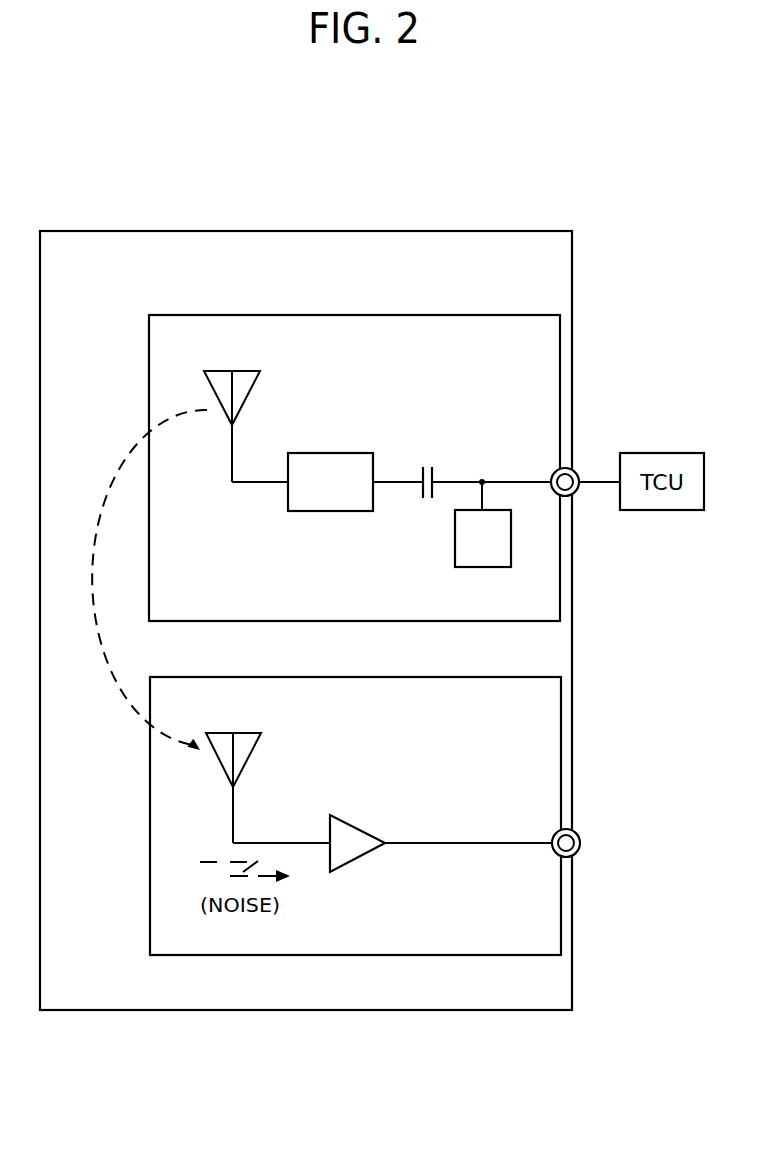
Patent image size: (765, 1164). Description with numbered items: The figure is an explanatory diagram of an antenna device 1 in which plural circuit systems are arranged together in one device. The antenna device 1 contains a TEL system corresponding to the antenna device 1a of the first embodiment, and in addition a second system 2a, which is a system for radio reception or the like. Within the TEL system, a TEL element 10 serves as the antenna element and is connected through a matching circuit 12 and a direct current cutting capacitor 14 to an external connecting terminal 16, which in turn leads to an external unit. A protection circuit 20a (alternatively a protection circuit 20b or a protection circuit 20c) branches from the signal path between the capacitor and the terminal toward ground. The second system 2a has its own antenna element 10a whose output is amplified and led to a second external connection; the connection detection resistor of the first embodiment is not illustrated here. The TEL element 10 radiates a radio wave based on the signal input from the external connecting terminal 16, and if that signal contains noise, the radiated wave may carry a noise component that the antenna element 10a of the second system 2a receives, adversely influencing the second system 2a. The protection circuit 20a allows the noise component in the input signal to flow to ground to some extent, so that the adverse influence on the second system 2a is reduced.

The antenna device 1 is at (177, 230).
The antenna device 1a is at (260, 314).
The second system 2a is at (205, 676).
The TEL element 10 is at (216, 369).
The antenna element 10a is at (248, 732).
The matching circuit 12 is at (316, 452).
The direct current cutting capacitor 14 is at (422, 469).
The external connecting terminal 16 is at (553, 470).
The protection circuit 20a is at (406, 540).
The protection circuit 20b is at (483, 538).
The protection circuit 20c is at (455, 538).